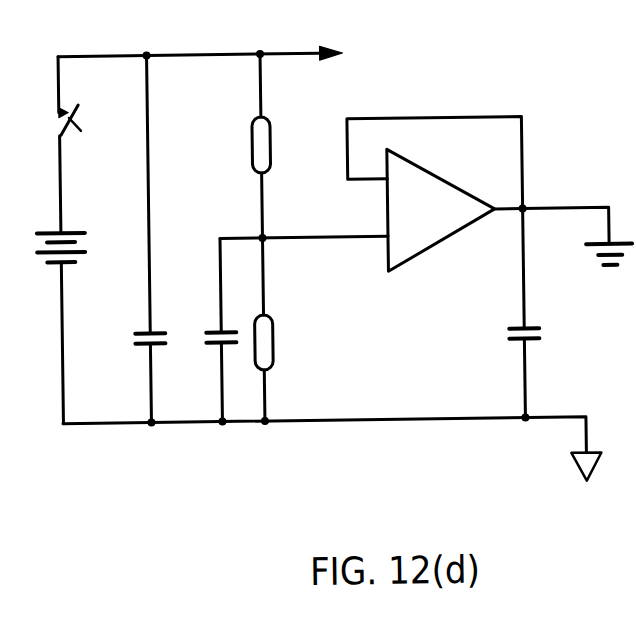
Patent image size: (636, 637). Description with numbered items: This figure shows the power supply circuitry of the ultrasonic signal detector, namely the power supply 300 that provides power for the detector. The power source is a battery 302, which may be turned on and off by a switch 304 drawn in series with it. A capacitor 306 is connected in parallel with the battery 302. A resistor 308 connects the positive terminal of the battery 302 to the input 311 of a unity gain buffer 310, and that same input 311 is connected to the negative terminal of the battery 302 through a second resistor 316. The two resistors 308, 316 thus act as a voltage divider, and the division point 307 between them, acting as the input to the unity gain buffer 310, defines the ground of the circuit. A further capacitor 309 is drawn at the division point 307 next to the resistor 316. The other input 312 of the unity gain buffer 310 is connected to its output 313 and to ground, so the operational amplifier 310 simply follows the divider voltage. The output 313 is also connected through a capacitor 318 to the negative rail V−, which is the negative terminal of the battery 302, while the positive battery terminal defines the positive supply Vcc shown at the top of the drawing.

The power supply 300 is at (334, 255).
The battery 302 is at (80, 252).
The switch 304 is at (81, 131).
The capacitor 306 is at (140, 343).
The division point 307 is at (260, 236).
The resistor 308 is at (254, 130).
The capacitor 309 is at (207, 344).
The unity gain buffer 310 is at (442, 245).
The input 311 is at (386, 242).
The input 312 is at (387, 185).
The output 313 is at (527, 209).
The resistor 316 is at (274, 338).
The capacitor 318 is at (510, 348).